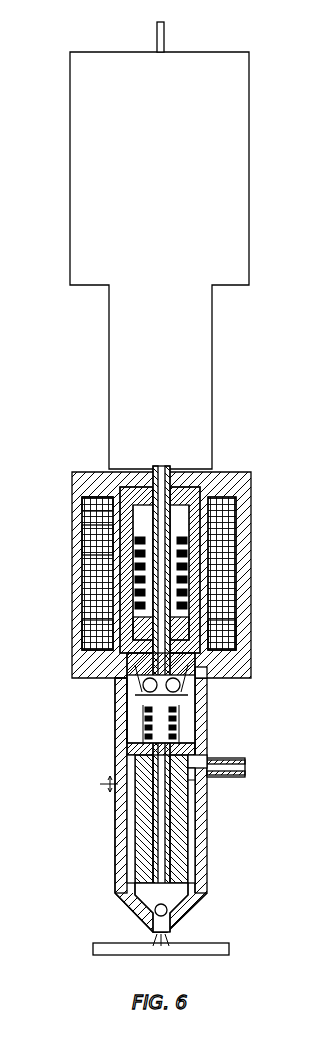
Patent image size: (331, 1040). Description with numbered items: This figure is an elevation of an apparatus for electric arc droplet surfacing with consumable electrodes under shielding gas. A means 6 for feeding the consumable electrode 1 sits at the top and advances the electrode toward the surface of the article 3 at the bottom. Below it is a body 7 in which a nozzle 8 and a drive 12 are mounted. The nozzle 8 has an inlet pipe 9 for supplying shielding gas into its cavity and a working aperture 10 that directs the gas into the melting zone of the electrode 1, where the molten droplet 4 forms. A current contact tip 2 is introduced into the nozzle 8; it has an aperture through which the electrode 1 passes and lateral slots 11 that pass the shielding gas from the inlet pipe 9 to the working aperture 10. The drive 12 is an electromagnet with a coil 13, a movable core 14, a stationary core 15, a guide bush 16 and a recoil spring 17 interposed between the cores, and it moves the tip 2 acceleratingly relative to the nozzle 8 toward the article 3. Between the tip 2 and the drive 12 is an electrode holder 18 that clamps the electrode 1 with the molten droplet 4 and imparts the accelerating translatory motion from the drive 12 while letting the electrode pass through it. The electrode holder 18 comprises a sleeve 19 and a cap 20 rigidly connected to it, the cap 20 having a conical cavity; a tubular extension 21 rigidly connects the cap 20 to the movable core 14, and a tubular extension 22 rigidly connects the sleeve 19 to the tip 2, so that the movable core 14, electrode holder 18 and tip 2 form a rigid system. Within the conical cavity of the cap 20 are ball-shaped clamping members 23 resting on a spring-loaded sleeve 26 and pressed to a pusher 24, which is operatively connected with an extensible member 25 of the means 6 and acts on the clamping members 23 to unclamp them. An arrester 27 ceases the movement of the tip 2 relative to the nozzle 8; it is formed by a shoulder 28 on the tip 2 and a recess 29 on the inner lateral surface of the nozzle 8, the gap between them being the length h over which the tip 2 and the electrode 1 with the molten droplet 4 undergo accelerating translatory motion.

The consumable electrode 1 is at (161, 41).
The current contact tip 2 is at (140, 840).
The article 3 is at (93, 946).
The molten droplet 4 is at (175, 910).
The means for feeding the consumable electrode 6 is at (244, 233).
The body 7 is at (78, 597).
The nozzle 8 is at (205, 878).
The inlet pipe 9 is at (240, 758).
The working aperture 10 is at (150, 934).
The lateral slots 11 is at (190, 846).
The drive 12 is at (262, 546).
The coil 13 is at (225, 602).
The movable core 14 is at (105, 520).
The stationary core 15 is at (115, 633).
The guide bush 16 is at (115, 540).
The recoil spring 17 is at (182, 568).
The electrode holder 18 is at (123, 764).
The sleeve 19 is at (120, 722).
The cap 20 is at (135, 690).
The tubular extension 21 is at (207, 634).
The tubular extension 22 is at (135, 805).
The clamping members 23 is at (183, 695).
The pusher 24 is at (240, 676).
The extensible member 25 is at (170, 482).
The spring-loaded sleeve 26 is at (196, 730).
The arrester 27 is at (85, 788).
The shoulder 28 is at (200, 785).
The recess 29 is at (196, 790).
The length h is at (105, 792).